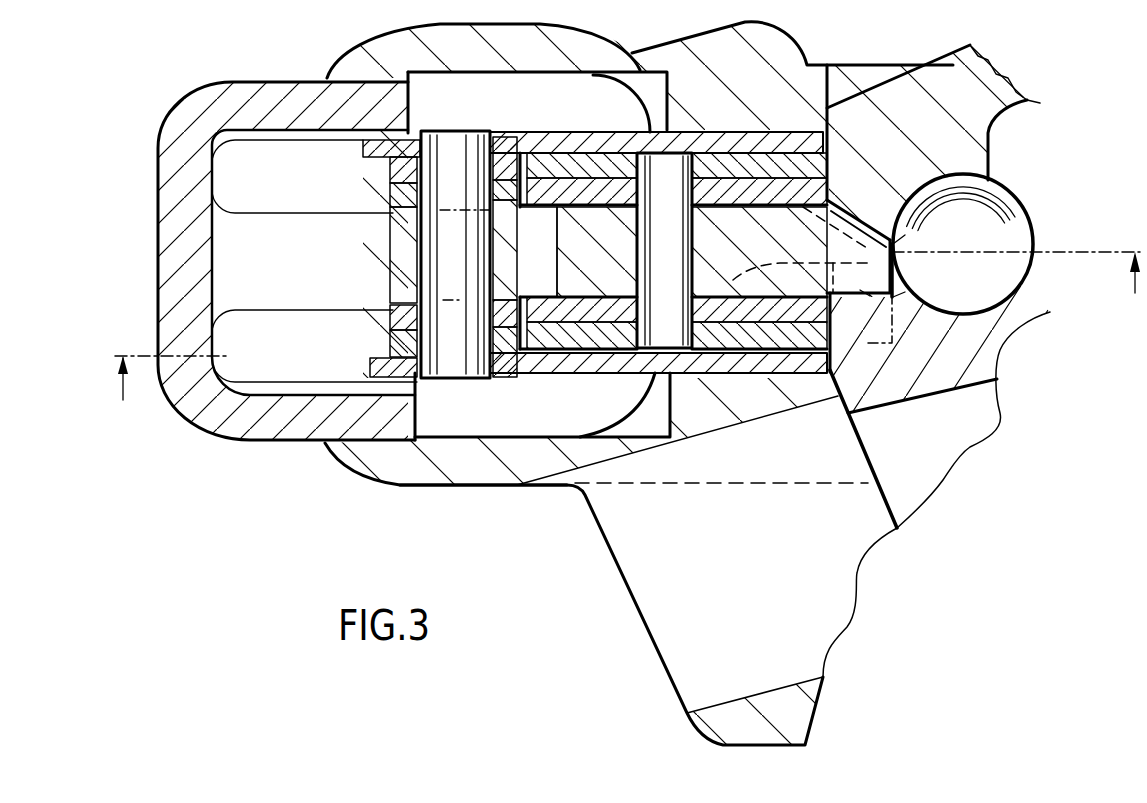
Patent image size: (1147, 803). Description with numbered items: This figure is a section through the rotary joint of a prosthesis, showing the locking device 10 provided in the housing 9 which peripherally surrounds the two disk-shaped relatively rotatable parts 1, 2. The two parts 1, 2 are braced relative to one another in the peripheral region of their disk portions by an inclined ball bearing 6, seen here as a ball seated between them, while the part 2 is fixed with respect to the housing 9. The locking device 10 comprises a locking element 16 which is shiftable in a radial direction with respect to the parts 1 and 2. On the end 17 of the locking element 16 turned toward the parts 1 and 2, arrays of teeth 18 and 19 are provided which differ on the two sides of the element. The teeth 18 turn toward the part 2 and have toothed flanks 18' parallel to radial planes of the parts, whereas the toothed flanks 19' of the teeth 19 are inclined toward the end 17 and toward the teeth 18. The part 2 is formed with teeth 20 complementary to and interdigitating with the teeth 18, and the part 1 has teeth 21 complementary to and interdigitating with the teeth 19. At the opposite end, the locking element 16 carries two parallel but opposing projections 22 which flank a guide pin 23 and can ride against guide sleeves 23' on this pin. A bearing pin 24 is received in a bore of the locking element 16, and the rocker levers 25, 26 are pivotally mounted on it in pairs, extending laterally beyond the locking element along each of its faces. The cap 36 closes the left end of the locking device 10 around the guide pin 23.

The rotary part 1 is at (988, 100).
The rotary part 2 is at (1010, 323).
The inclined ball bearing 6 is at (1000, 220).
The housing 9 is at (472, 473).
The locking device 10 is at (305, 462).
The locking element 16 is at (832, 227).
The end of the locking element 17 is at (893, 270).
The teeth 18 is at (801, 343).
The toothed flanks 18' is at (912, 427).
The teeth 19 is at (939, 229).
The toothed flanks 19' is at (863, 194).
The teeth 20 is at (870, 292).
The teeth 21 is at (877, 227).
The projections 22 is at (553, 260).
The guide pin 23 is at (371, 272).
The guide sleeves 23' is at (372, 247).
The bearing pin 24 is at (666, 287).
The rocker lever 25 is at (545, 187).
The rocker lever 26 is at (567, 163).
The cap 36 is at (162, 243).